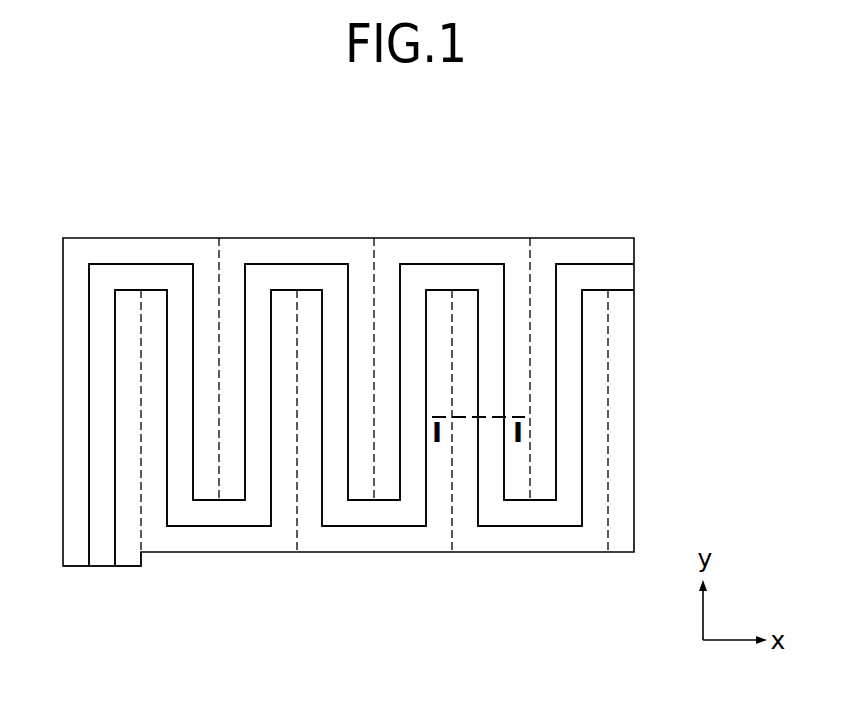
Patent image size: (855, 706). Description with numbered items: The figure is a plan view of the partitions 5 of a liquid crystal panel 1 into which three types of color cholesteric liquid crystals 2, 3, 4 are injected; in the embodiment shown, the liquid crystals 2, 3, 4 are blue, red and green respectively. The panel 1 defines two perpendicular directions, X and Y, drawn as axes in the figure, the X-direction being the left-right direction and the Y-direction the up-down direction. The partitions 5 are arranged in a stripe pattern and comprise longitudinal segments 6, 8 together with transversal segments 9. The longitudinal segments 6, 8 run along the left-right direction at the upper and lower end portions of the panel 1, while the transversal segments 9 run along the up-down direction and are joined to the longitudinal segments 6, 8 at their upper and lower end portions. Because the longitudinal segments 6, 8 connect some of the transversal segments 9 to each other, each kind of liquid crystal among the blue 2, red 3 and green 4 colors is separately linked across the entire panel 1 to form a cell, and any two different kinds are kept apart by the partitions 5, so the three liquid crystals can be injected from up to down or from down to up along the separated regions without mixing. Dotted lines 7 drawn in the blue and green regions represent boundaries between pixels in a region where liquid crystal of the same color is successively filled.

The panel 1 is at (506, 222).
The blue cholesteric liquid crystal 2 is at (76, 580).
The red cholesteric liquid crystal 3 is at (102, 580).
The green cholesteric liquid crystal 4 is at (128, 580).
The partitions 5 is at (751, 402).
The longitudinal segment 6 is at (608, 264).
The dotted lines 7 is at (220, 268).
The longitudinal segment 8 is at (543, 501).
The transversal segments 9 is at (556, 455).